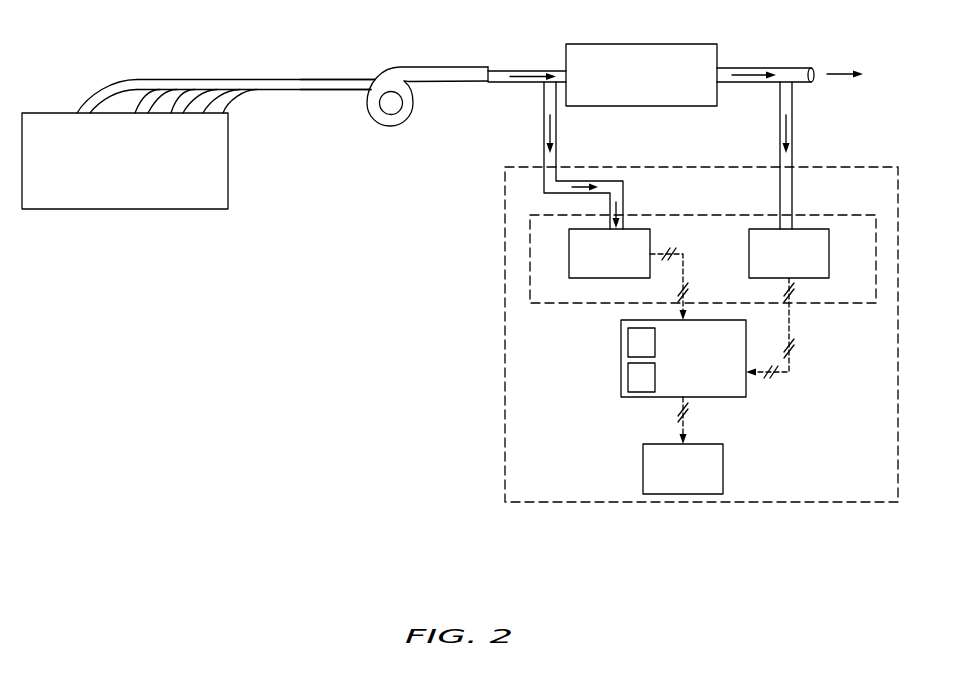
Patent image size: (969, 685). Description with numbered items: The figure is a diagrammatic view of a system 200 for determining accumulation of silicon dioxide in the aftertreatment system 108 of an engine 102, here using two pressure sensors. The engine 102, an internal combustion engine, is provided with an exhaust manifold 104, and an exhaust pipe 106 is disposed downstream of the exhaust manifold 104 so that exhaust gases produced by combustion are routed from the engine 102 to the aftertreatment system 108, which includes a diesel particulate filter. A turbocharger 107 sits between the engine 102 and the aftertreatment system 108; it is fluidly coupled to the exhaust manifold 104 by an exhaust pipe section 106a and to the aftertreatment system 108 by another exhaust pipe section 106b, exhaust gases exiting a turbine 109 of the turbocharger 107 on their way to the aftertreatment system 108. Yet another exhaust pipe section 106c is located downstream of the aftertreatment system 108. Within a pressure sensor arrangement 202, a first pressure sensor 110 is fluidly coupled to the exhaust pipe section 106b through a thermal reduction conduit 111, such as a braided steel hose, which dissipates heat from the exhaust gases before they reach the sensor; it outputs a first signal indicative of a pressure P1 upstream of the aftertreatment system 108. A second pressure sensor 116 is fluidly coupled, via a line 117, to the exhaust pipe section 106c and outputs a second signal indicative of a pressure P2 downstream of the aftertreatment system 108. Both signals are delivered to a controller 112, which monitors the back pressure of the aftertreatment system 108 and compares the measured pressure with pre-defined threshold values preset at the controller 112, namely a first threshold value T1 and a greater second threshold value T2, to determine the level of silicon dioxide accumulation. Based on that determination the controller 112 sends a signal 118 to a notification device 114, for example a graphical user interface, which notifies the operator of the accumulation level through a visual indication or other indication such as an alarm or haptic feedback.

The engine 102 is at (158, 214).
The exhaust manifold 104 is at (180, 78).
The exhaust pipe 106 is at (300, 100).
The exhaust pipe section 106a is at (355, 91).
The exhaust pipe section 106b is at (499, 84).
The exhaust pipe section 106c is at (755, 66).
The turbocharger 107 is at (450, 57).
The aftertreatment system 108 is at (627, 88).
The turbine 109 is at (404, 118).
The first pressure sensor 110 is at (595, 264).
The thermal reduction conduit 111 is at (557, 138).
The controller 112 is at (669, 373).
The notification device 114 is at (669, 480).
The second pressure sensor 116 is at (775, 264).
The second sampling line 117 is at (794, 110).
The control signal 118 is at (687, 424).
The system 200 is at (852, 193).
The sensor assembly 202 is at (839, 241).
The pressure P1 is at (684, 270).
The pressure P2 is at (790, 320).
The first threshold value T1 is at (628, 342).
The second threshold value T2 is at (628, 378).